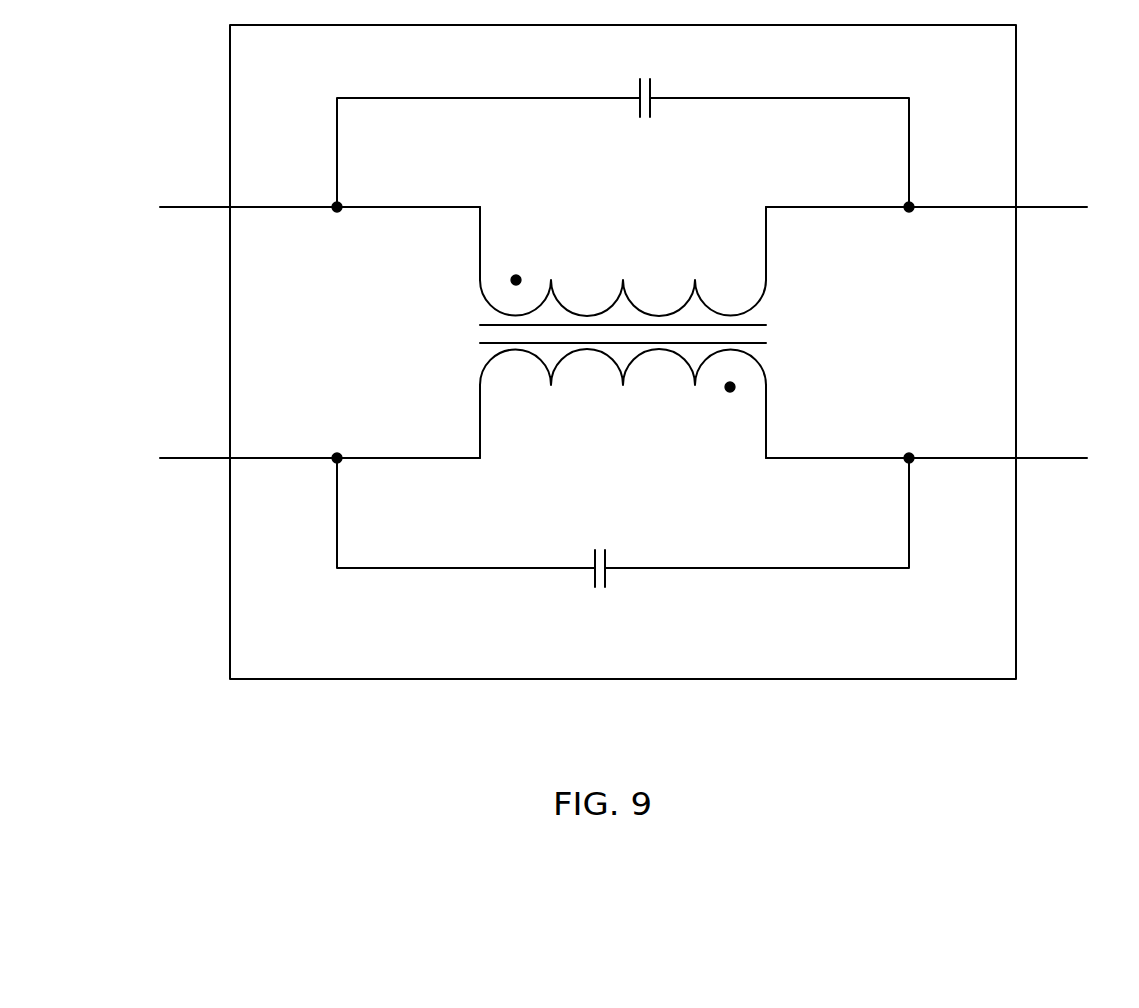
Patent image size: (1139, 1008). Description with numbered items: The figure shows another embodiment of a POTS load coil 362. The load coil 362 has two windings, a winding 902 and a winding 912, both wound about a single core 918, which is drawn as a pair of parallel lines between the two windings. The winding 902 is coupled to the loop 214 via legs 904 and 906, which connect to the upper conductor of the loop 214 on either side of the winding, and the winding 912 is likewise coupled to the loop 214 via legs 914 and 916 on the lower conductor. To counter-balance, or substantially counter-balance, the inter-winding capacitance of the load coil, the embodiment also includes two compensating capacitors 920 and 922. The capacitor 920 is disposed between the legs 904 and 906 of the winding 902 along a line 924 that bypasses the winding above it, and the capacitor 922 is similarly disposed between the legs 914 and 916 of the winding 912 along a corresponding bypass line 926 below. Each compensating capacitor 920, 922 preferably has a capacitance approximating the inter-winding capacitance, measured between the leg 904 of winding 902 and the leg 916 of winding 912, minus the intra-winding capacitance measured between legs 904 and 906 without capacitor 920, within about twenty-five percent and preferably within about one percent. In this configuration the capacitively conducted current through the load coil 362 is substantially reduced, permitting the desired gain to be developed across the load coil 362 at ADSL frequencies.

The loop 214 is at (195, 207).
The load coil 362 is at (1016, 602).
The winding 902 is at (770, 303).
The leg 904 is at (480, 233).
The leg 906 is at (766, 243).
The winding 912 is at (468, 367).
The leg 914 is at (480, 430).
The leg 916 is at (768, 424).
The core 918 is at (750, 343).
The compensating capacitor 920 is at (653, 87).
The compensating capacitor 922 is at (593, 554).
The line 924 is at (693, 98).
The second bypass conductor 926 is at (873, 568).